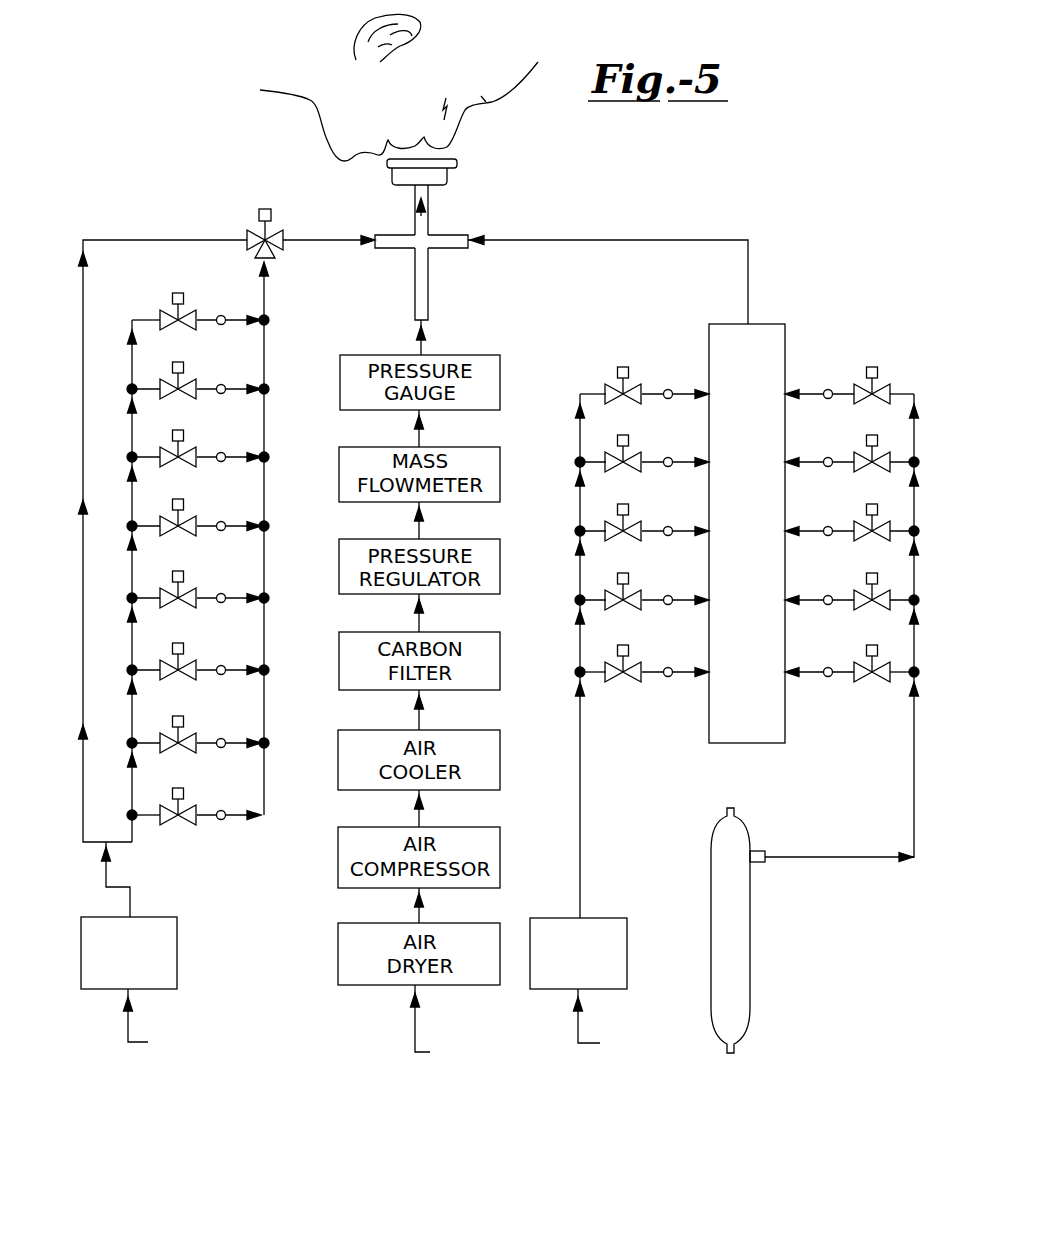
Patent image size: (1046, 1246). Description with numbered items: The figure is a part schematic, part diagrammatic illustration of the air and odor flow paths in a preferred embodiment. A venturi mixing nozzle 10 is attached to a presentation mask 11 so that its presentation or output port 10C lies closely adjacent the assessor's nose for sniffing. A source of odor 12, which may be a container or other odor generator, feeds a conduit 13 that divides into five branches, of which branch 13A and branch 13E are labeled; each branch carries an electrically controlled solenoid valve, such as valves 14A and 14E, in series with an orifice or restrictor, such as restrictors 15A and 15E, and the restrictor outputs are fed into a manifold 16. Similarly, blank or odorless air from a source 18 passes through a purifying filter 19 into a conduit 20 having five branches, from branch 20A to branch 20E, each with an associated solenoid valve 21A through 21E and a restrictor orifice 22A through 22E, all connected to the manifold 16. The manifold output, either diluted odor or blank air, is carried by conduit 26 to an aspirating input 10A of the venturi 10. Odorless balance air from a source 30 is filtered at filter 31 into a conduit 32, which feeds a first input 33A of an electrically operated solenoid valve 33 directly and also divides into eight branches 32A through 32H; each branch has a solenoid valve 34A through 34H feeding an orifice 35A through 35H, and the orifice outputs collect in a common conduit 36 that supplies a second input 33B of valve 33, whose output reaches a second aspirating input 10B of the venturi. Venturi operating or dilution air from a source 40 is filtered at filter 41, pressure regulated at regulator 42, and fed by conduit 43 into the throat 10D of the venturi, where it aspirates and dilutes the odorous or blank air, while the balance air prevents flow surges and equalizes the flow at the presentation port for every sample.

The venturi mixing nozzle 10 is at (437, 243).
The aspirating input 10A is at (458, 250).
The second aspirating input 10B is at (376, 234).
The presentation or output port 10C is at (430, 218).
The throat 10D is at (436, 229).
The presentation mask 11 is at (443, 162).
The source of odor 12 is at (710, 1003).
The conduit 13 is at (914, 800).
The odor conduit branch 13A is at (906, 392).
The odor conduit branch 13E is at (913, 695).
The solenoid valve 14A is at (885, 385).
The solenoid valve 14E is at (872, 682).
The orifice or restrictor 15A is at (828, 390).
The orifice or restrictor 15E is at (828, 678).
The manifold 16 is at (755, 541).
The source of blank air 18 is at (576, 1027).
The purifying filter 19 is at (628, 950).
The conduit 20 is at (580, 820).
The blank air conduit branch 20A is at (580, 390).
The blank air conduit branch 20E is at (590, 680).
The solenoid valve 21A is at (613, 385).
The solenoid valve 21E is at (630, 683).
The restrictor opening or orifice 22A is at (668, 386).
The restrictor opening or orifice 22E is at (668, 667).
The conduit 26 is at (610, 240).
The source of balance air 30 is at (128, 1026).
The filter 31 is at (178, 968).
The conduit 32 is at (128, 906).
The balance air conduit branch 32A is at (150, 318).
The balance air conduit branch 32H is at (150, 817).
The solenoid valve 33 is at (279, 219).
The first input 33A is at (260, 230).
The second input 33B is at (270, 233).
The solenoid valve 34A is at (195, 311).
The solenoid valve 34H is at (165, 826).
The restrictor opening or orifice 35A is at (217, 326).
The restrictor opening or orifice 35H is at (220, 822).
The common conduit 36 is at (268, 298).
The source of venturi operating air 40 is at (414, 1026).
The filter 41 is at (500, 657).
The pressure regulator 42 is at (500, 565).
The conduit 43 is at (422, 346).